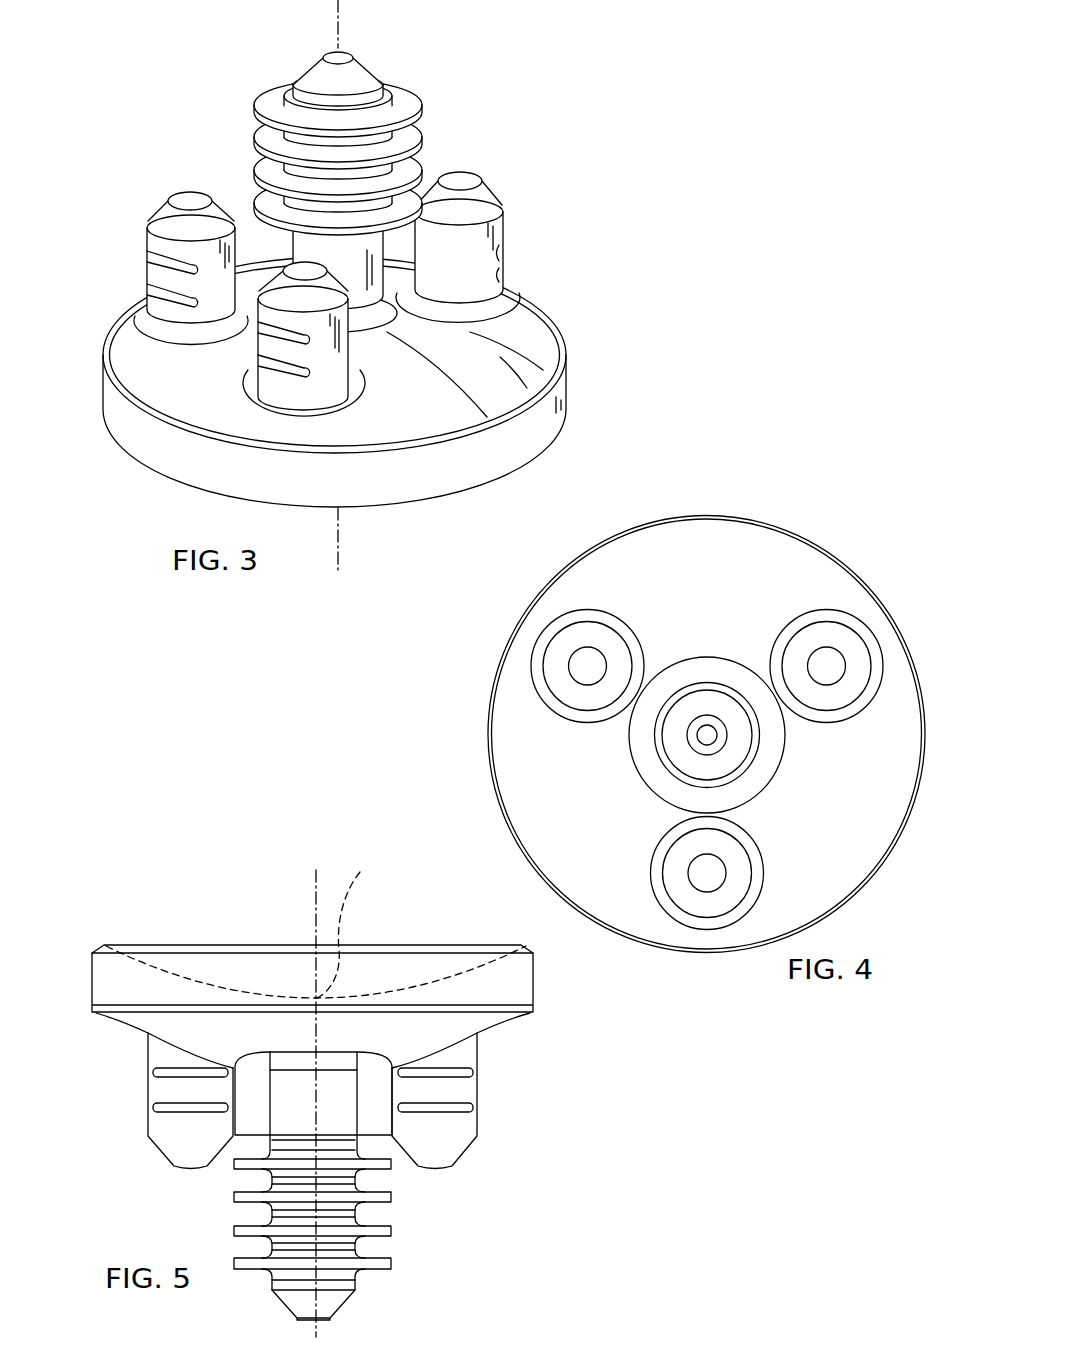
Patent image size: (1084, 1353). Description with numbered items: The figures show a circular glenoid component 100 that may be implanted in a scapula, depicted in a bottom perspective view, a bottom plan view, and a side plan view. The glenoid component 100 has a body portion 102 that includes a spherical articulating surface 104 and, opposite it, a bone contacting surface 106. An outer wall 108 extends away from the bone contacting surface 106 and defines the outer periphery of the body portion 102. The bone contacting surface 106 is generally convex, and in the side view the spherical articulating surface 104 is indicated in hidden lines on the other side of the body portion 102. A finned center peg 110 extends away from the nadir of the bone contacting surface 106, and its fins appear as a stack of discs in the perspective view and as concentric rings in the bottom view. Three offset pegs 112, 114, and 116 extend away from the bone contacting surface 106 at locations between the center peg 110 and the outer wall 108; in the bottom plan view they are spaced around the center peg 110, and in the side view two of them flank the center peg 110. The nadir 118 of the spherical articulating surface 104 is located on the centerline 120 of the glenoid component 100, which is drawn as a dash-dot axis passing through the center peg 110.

In FIG. 3, the glenoid component 100 is at (351, 286).
In FIG. 4, the glenoid component 100 is at (691, 681).
In FIG. 5, the glenoid component 100 is at (344, 1090).
In FIG. 3, the body portion 102 is at (566, 347).
In FIG. 5, the body portion 102 is at (535, 1010).
In FIG. 5, the spherical articulating surface 104 is at (390, 993).
In FIG. 3, the bone contacting surface 106 is at (119, 334).
In FIG. 4, the bone contacting surface 106 is at (732, 592).
In FIG. 5, the bone contacting surface 106 is at (512, 1025).
In FIG. 3, the outer wall 108 is at (572, 370).
In FIG. 5, the outer wall 108 is at (535, 982).
In FIG. 3, the finned center peg 110 is at (256, 152).
In FIG. 4, the finned center peg 110 is at (674, 660).
In FIG. 5, the finned center peg 110 is at (392, 1237).
In FIG. 3, the offset peg 112 is at (145, 227).
In FIG. 4, the offset peg 112 is at (541, 640).
In FIG. 5, the offset peg 112 is at (172, 1163).
In FIG. 3, the offset peg 114 is at (258, 352).
In FIG. 4, the offset peg 114 is at (655, 880).
In FIG. 5, the offset peg 114 is at (465, 1152).
In FIG. 3, the offset peg 116 is at (510, 240).
In FIG. 4, the offset peg 116 is at (838, 612).
In FIG. 5, the nadir 118 is at (359, 928).
In FIG. 3, the centerline 120 is at (338, 520).
In FIG. 5, the centerline 120 is at (317, 885).